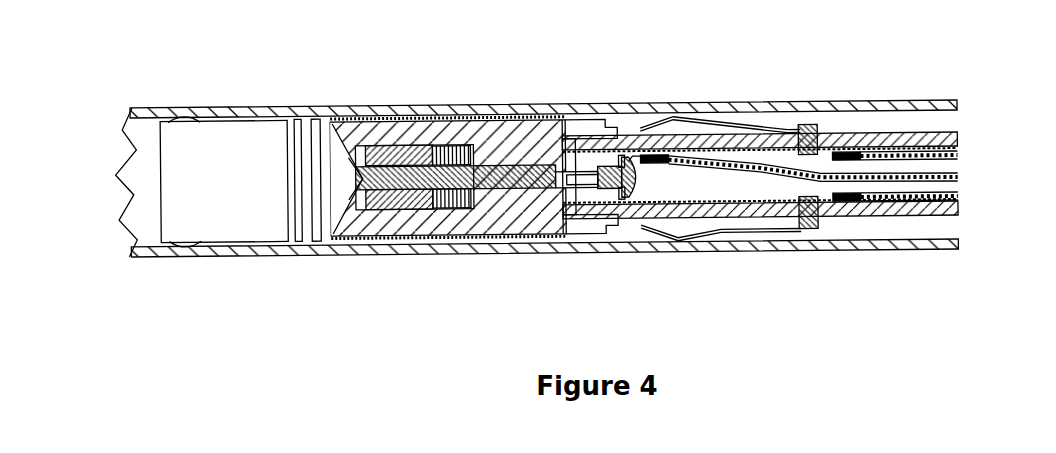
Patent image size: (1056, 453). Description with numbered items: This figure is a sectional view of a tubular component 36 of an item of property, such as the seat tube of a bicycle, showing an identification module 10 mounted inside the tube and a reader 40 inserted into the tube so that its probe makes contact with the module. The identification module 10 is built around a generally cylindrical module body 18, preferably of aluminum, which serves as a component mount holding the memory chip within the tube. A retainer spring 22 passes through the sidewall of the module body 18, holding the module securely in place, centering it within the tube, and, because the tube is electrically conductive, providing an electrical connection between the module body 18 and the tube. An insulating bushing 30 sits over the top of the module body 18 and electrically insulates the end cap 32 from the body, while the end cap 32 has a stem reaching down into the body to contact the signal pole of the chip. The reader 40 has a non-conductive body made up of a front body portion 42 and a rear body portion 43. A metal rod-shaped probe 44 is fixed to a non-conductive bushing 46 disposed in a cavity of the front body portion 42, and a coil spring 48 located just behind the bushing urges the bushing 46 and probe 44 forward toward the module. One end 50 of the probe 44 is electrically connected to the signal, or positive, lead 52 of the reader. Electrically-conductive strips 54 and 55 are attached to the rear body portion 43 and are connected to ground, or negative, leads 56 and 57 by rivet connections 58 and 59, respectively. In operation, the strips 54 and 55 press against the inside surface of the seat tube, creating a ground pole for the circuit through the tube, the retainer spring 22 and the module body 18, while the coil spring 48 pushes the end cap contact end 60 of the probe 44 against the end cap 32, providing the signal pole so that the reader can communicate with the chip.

The identification module 10 is at (152, 184).
The module body 18 is at (263, 133).
The retainer spring 22 is at (181, 118).
The insulating bushing 30 is at (299, 235).
The end cap 32 is at (316, 228).
The tubular component 36 is at (665, 103).
The reader 40 is at (833, 125).
The front body portion 42 is at (440, 137).
The rear body portion 43 is at (571, 145).
The probe 44 is at (488, 175).
The non-conductive bushing 46 is at (428, 200).
The coil spring 48 is at (467, 207).
The end of probe 50 is at (635, 200).
The signal lead 52 is at (960, 178).
The electrically-conductive strip 54 is at (711, 115).
The electrically-conductive strip 55 is at (717, 235).
The ground lead 56 is at (960, 153).
The ground lead 57 is at (960, 197).
The rivet connection 58 is at (806, 127).
The rivet connection 59 is at (812, 230).
The end cap contact end 60 is at (358, 200).